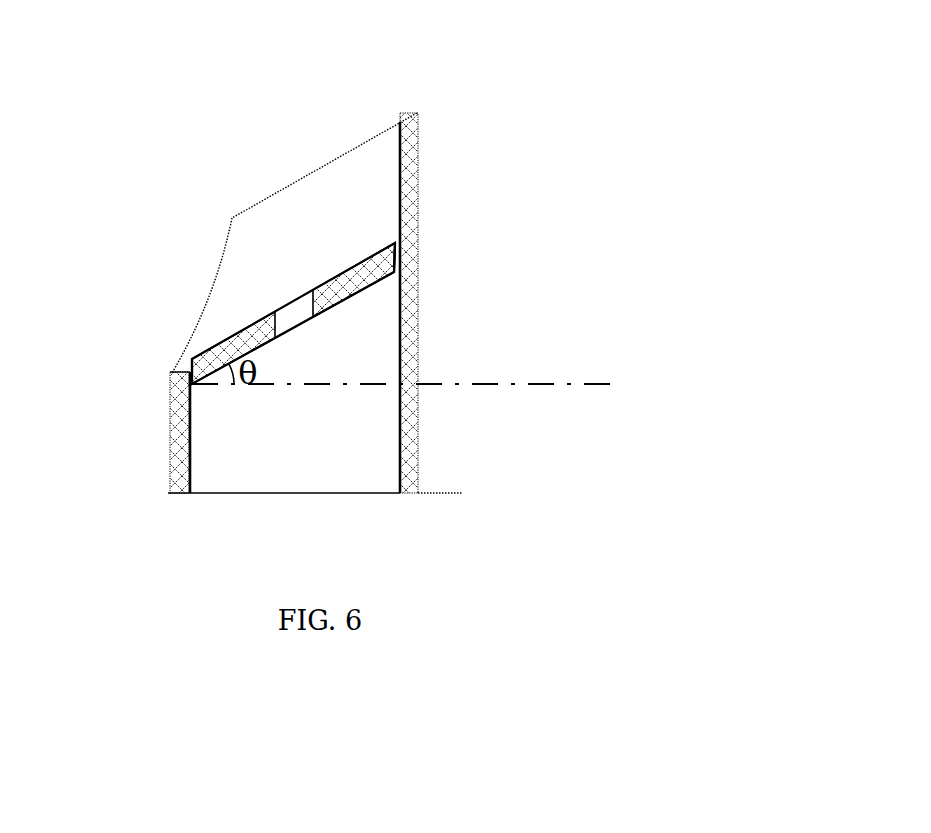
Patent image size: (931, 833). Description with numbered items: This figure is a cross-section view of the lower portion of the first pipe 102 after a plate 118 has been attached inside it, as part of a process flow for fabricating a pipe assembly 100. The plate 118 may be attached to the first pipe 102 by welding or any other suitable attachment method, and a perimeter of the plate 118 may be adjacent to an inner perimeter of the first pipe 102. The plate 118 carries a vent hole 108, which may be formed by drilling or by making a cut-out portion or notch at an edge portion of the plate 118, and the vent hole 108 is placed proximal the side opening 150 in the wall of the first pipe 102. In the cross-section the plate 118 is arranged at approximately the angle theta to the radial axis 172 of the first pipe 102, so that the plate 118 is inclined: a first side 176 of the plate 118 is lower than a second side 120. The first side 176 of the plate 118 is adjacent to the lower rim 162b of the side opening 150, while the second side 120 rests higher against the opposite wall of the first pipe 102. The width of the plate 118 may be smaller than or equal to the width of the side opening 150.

The window assembly 100 is at (517, 110).
The first pipe 102 is at (412, 340).
The vent hole 108 is at (283, 315).
The plate 118 is at (323, 287).
The second side 120 is at (397, 250).
The side opening 150 is at (195, 265).
The lower rim 162b is at (173, 376).
The radial axis 172 is at (521, 383).
The first side 176 is at (200, 386).